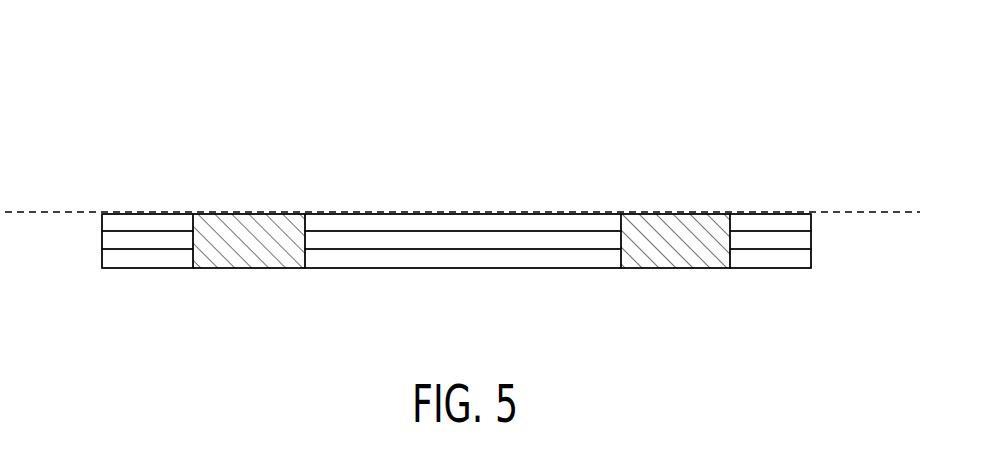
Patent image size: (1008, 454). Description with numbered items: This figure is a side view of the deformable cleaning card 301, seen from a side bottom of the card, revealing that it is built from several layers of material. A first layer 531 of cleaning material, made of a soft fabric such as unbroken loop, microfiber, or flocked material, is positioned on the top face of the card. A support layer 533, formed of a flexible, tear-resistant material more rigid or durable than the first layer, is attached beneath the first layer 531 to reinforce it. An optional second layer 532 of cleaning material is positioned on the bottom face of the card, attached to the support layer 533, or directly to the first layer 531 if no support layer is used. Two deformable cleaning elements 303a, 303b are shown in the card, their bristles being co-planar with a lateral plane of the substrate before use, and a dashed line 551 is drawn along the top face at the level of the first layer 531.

The card 301 is at (258, 88).
The deformable cleaning element 303a is at (677, 218).
The deformable cleaning element 303b is at (245, 215).
The first layer of cleaning material 531 is at (108, 223).
The second layer of cleaning material 532 is at (150, 260).
The support layer 533 is at (110, 238).
The reference plane 551 is at (886, 210).